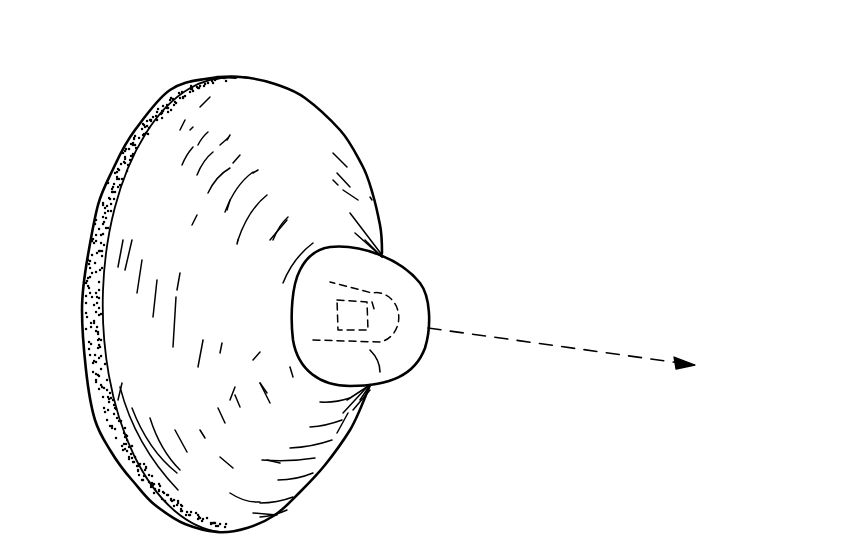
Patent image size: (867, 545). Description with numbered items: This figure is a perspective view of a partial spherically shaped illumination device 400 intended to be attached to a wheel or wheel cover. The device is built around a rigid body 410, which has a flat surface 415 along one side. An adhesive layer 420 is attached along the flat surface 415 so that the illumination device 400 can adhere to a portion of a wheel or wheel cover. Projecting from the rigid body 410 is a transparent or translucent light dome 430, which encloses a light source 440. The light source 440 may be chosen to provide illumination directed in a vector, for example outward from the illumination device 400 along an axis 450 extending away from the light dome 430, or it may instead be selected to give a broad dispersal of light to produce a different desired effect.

The illumination device 400 is at (467, 98).
The rigid body 410 is at (325, 137).
The flat surface 415 is at (249, 80).
The adhesive layer 420 is at (138, 131).
The light dome 430 is at (427, 300).
The light source 440 is at (370, 293).
The axis 450 is at (573, 345).